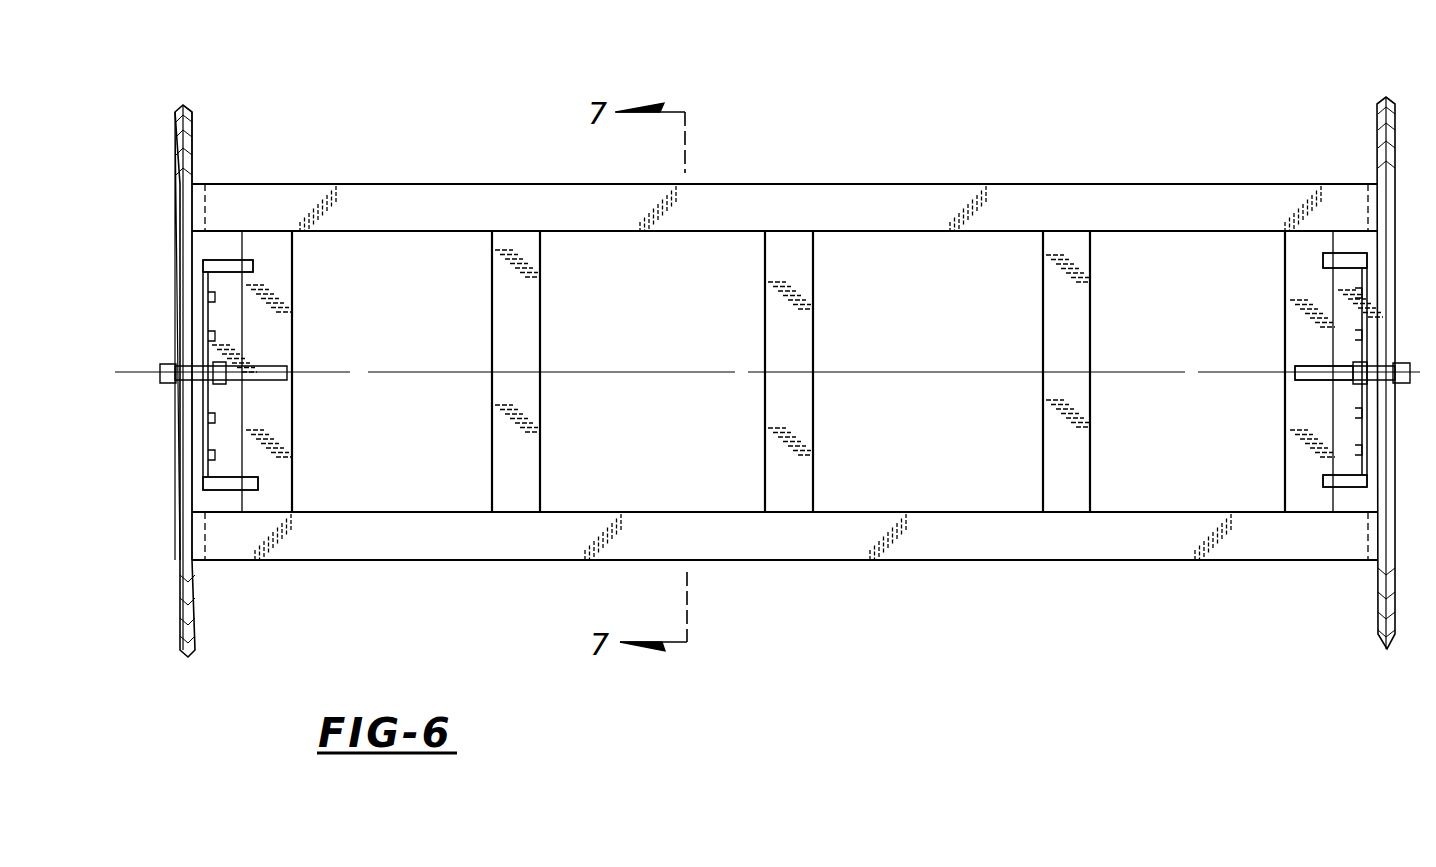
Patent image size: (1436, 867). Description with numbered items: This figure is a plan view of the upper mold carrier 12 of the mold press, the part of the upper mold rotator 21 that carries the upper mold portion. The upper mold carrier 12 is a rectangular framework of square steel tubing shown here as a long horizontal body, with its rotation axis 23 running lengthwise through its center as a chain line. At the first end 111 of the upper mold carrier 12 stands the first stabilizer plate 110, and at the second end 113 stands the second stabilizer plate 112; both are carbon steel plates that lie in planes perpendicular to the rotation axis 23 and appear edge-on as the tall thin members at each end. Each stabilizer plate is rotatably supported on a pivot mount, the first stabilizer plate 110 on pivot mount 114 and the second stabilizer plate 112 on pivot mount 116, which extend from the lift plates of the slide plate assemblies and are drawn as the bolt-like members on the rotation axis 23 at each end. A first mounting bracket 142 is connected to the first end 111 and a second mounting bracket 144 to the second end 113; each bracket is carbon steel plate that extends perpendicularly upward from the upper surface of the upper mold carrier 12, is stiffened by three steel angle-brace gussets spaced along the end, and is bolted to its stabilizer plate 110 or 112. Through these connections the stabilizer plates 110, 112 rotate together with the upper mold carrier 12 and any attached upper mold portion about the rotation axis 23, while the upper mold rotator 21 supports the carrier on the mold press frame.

The upper mold carrier 12 is at (869, 185).
The upper mold rotator 21 is at (197, 113).
The rotation axis 23 is at (955, 370).
The first stabilizer plate 110 is at (188, 158).
The first end of the upper mold carrier 111 is at (228, 200).
The second stabilizer plate 112 is at (1378, 137).
The second end of the upper mold carrier 113 is at (1316, 210).
The pivot mount 114 is at (172, 363).
The pivot mount 116 is at (1407, 378).
The first mounting bracket 142 is at (200, 470).
The second mounting bracket 144 is at (1370, 418).